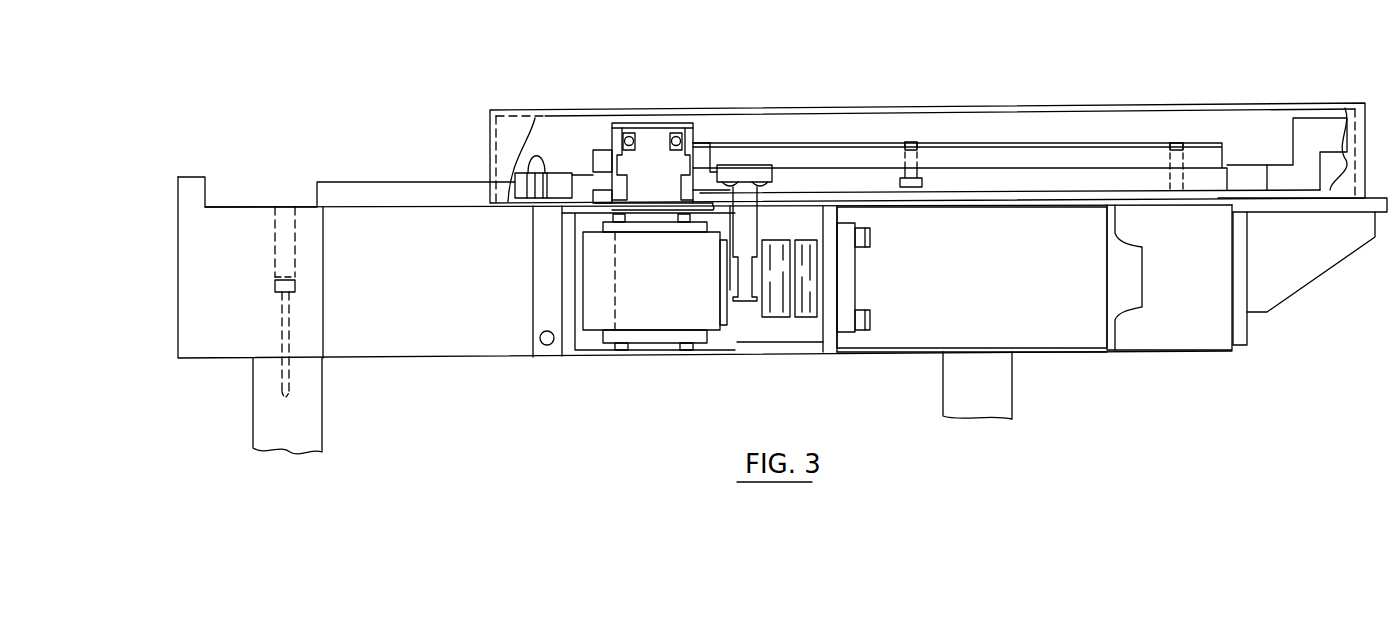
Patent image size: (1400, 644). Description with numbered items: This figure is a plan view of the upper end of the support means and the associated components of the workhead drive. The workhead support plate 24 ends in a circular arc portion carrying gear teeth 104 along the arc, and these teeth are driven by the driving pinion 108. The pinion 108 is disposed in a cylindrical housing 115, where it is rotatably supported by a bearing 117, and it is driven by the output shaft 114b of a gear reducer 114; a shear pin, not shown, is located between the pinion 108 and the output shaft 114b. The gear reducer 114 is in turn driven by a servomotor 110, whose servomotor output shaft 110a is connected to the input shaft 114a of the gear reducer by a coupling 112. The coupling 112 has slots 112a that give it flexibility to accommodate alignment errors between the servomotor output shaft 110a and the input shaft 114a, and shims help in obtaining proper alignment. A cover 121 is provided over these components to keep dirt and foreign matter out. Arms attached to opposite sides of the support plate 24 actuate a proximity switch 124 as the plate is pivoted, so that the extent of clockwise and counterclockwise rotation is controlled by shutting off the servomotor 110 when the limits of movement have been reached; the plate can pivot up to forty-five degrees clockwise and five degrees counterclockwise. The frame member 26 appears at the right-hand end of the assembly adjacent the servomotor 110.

The workhead support plate 24 is at (562, 150).
The frame support member 26 is at (1206, 268).
The gear teeth 104 is at (547, 173).
The driving pinion 108 is at (657, 172).
The servomotor 110 is at (981, 285).
The servomotor output shaft 110a is at (823, 276).
The coupling 112 is at (776, 328).
The slots 112a is at (798, 316).
The gear reducer 114 is at (630, 308).
The input shaft of gear reducer 114a is at (738, 292).
The output shaft of gear reducer 114b is at (652, 217).
The cylindrical housing 115 is at (610, 138).
The bearing 117 is at (676, 133).
The cover 121 is at (1095, 105).
The proximity switch 124 is at (753, 165).